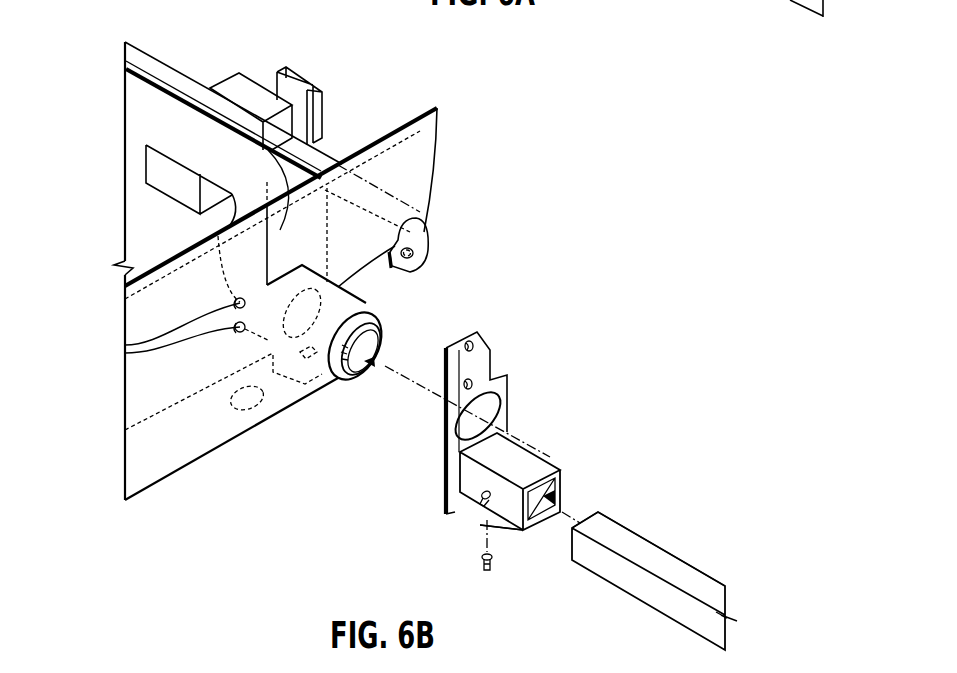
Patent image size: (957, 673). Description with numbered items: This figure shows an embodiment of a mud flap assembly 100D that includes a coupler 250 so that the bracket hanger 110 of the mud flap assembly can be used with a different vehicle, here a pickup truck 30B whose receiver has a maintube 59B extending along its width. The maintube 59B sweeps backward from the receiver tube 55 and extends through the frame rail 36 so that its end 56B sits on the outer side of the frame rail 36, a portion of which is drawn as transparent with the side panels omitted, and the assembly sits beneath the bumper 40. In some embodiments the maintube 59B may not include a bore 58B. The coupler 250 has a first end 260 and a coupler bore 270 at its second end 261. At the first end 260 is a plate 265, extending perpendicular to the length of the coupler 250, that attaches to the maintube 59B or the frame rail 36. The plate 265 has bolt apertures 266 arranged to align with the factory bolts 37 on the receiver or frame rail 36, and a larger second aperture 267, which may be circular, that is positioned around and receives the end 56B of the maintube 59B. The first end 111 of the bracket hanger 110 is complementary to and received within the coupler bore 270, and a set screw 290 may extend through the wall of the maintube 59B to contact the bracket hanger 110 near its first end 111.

The wall panel assembly 30B is at (211, 57).
The maintube 59B is at (137, 118).
The frame rail 36 is at (180, 440).
The factory bolts 37 is at (124, 349).
The receiver tube 55 is at (327, 115).
The bumper 40 is at (427, 213).
The end of maintube 56B is at (346, 380).
The bore 58B is at (375, 364).
The plate 265 is at (445, 395).
The bolt apertures 266 is at (467, 380).
The second aperture 267 is at (488, 378).
The first end of coupler 260 is at (549, 513).
The coupler bore 270 is at (561, 494).
The coupler 250 is at (528, 531).
The second end of coupler 261 is at (511, 582).
The set screw 290 is at (480, 504).
The bracket hanger 110 is at (654, 556).
The first end of bracket hanger 111 is at (600, 512).
The mud flap assembly 100D is at (779, 306).